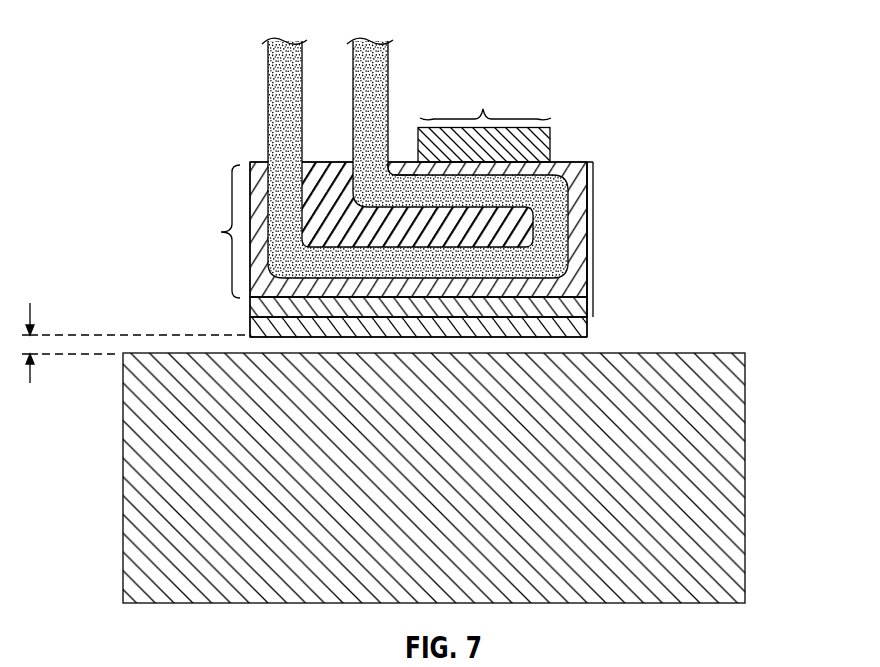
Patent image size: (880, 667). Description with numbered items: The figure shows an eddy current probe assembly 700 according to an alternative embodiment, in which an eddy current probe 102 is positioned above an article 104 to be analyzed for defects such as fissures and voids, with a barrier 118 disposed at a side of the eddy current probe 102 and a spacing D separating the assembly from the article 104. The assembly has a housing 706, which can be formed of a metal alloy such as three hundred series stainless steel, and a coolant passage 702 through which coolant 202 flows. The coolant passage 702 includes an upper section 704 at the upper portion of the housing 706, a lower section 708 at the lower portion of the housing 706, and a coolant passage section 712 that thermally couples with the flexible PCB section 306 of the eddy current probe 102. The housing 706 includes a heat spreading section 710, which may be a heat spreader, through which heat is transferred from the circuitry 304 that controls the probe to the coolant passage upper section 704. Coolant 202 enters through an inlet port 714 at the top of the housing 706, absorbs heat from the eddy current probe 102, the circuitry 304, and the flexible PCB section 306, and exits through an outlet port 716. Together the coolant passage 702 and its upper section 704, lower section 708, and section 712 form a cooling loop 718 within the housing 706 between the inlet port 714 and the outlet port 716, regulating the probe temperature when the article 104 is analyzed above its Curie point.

The eddy current probe assembly 700 is at (160, 52).
The coolant passage 702 is at (389, 62).
The coolant passage upper section 704 is at (402, 163).
The housing 706 is at (565, 262).
The coolant passage lower section 708 is at (355, 245).
The heat spreading section 710 is at (485, 98).
The coolant passage section 712 is at (568, 218).
The inlet port 714 is at (390, 166).
The outlet port 716 is at (267, 163).
The cooling loop 718 is at (207, 231).
The coolant 202 is at (560, 203).
The circuitry 304 is at (542, 138).
The flexible PCB section 306 is at (592, 164).
The eddy current probe 102 is at (573, 312).
The barrier 118 is at (582, 322).
The article 104 is at (730, 495).
The distance D is at (30, 312).